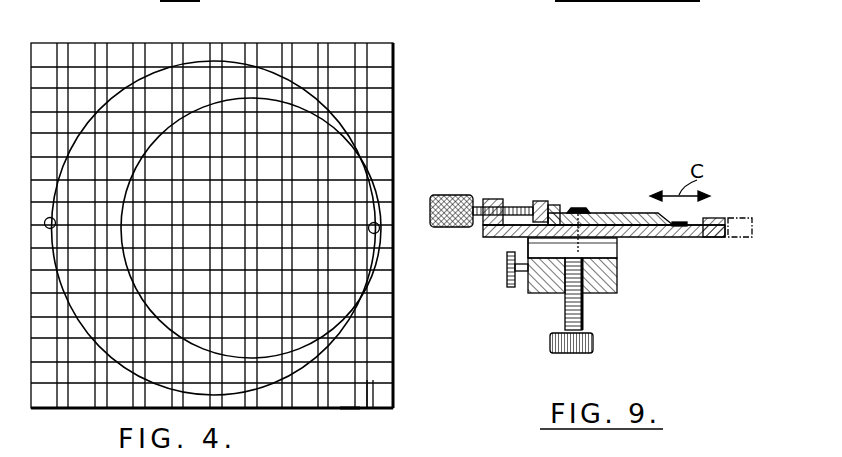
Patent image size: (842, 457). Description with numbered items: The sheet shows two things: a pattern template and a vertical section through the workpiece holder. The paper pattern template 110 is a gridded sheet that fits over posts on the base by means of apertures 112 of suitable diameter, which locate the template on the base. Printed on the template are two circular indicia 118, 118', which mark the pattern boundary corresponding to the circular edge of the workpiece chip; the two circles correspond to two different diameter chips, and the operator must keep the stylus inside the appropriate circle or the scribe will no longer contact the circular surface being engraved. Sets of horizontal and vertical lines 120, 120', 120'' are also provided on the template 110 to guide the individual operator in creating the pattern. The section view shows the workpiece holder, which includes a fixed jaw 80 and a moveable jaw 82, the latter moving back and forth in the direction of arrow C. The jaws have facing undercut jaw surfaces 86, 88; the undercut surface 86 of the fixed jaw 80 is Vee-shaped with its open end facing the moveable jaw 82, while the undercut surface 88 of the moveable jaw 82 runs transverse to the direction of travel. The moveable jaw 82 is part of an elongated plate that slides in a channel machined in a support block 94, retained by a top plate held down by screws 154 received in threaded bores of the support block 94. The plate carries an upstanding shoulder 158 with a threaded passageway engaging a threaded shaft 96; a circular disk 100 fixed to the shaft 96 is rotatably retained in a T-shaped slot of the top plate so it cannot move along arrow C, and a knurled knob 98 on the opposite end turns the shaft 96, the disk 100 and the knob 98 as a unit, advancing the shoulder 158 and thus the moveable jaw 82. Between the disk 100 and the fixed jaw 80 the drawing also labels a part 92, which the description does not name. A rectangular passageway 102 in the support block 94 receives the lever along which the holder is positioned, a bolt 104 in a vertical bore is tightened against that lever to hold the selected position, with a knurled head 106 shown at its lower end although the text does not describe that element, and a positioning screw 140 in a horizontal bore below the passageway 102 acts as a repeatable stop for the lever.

In FIG. 4, the paper pattern template 110 is at (376, 373).
In FIG. 4, the circular indicia 118 is at (214, 201).
In FIG. 4, the circular indicia 118' is at (292, 209).
In FIG. 4, the apertures 112 is at (380, 229).
In FIG. 4, the horizontal and vertical lines 120 is at (332, 429).
In FIG. 4, the horizontal and vertical lines 120' is at (393, 418).
In FIG. 4, the horizontal and vertical lines 120'' is at (419, 406).
In FIG. 9, the fixed jaw 80 is at (623, 213).
In FIG. 9, the upstanding shoulder 158 is at (492, 199).
In FIG. 9, the threaded shaft 96 is at (516, 200).
In FIG. 9, the knurled knob 98 is at (456, 195).
In FIG. 9, the circular disk 100 is at (540, 200).
In FIG. 9, the clamp block 92 is at (553, 206).
In FIG. 9, the screws 154 is at (582, 208).
In FIG. 9, the undercut jaw surface 86 is at (681, 228).
In FIG. 9, the undercut jaw surface 88 is at (698, 218).
In FIG. 9, the moveable jaw 82 is at (717, 219).
In FIG. 9, the support block 94 is at (612, 270).
In FIG. 9, the bolt 104 is at (583, 311).
In FIG. 9, the knurled knob 106 is at (593, 345).
In FIG. 9, the positioning screw 140 is at (509, 276).
In FIG. 9, the passageway 102 is at (528, 244).